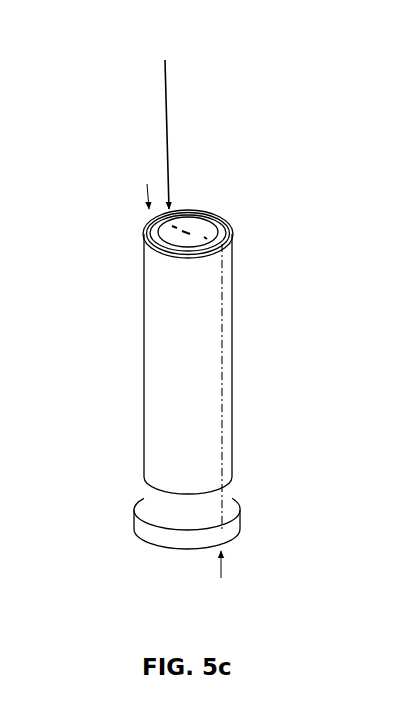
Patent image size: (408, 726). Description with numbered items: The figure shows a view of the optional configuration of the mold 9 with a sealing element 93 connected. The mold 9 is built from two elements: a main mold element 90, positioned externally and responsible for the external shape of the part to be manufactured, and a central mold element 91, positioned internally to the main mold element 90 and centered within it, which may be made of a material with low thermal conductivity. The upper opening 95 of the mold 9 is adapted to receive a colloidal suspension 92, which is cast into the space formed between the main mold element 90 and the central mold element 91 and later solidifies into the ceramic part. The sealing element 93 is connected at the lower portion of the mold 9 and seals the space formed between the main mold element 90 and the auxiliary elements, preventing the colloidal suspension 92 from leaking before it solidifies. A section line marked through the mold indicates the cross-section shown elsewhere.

The connector sleeve assembly 9 is at (276, 316).
The cylindrical body 90 is at (144, 318).
The central bore 91 is at (197, 222).
The annular rim 92 is at (221, 228).
The flange 93 is at (134, 516).
The insertion direction 95 is at (166, 116).